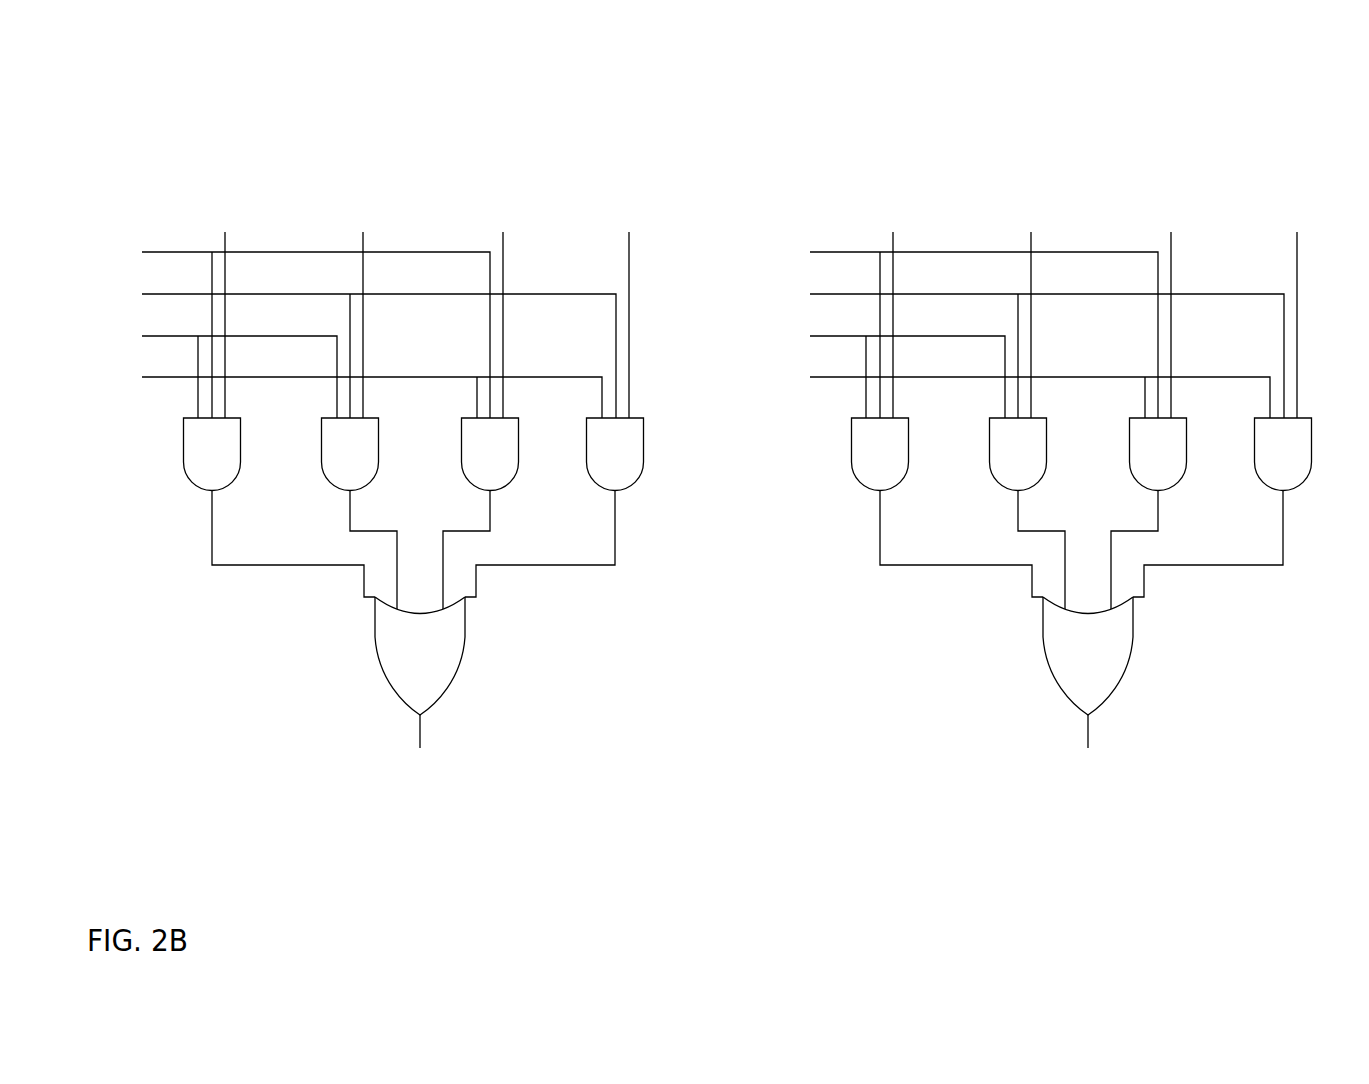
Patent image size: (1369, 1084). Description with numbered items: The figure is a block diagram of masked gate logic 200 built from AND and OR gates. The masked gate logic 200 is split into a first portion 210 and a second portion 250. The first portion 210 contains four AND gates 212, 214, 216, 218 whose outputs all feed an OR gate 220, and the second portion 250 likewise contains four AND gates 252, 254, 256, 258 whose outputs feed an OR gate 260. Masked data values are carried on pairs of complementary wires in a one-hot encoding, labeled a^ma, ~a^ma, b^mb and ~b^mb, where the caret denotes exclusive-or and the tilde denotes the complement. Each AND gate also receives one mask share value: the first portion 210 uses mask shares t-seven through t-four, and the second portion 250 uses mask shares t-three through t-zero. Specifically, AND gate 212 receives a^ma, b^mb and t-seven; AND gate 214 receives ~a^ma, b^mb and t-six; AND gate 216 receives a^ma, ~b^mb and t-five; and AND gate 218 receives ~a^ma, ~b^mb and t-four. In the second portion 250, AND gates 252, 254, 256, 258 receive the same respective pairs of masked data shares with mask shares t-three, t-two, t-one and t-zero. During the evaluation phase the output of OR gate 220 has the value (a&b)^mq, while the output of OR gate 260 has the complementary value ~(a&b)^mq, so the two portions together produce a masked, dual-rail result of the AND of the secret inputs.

The masked gate logic 200 is at (150, 122).
The first portion 210 is at (324, 178).
The AND gate 212 is at (183, 468).
The AND gate 214 is at (321, 470).
The AND gate 216 is at (508, 490).
The AND gate 218 is at (632, 489).
The OR gate 220 is at (382, 627).
The second portion 250 is at (1108, 184).
The AND gate 252 is at (851, 468).
The AND gate 254 is at (989, 470).
The AND gate 256 is at (1176, 490).
The AND gate 258 is at (1300, 489).
The OR gate 260 is at (1052, 620).